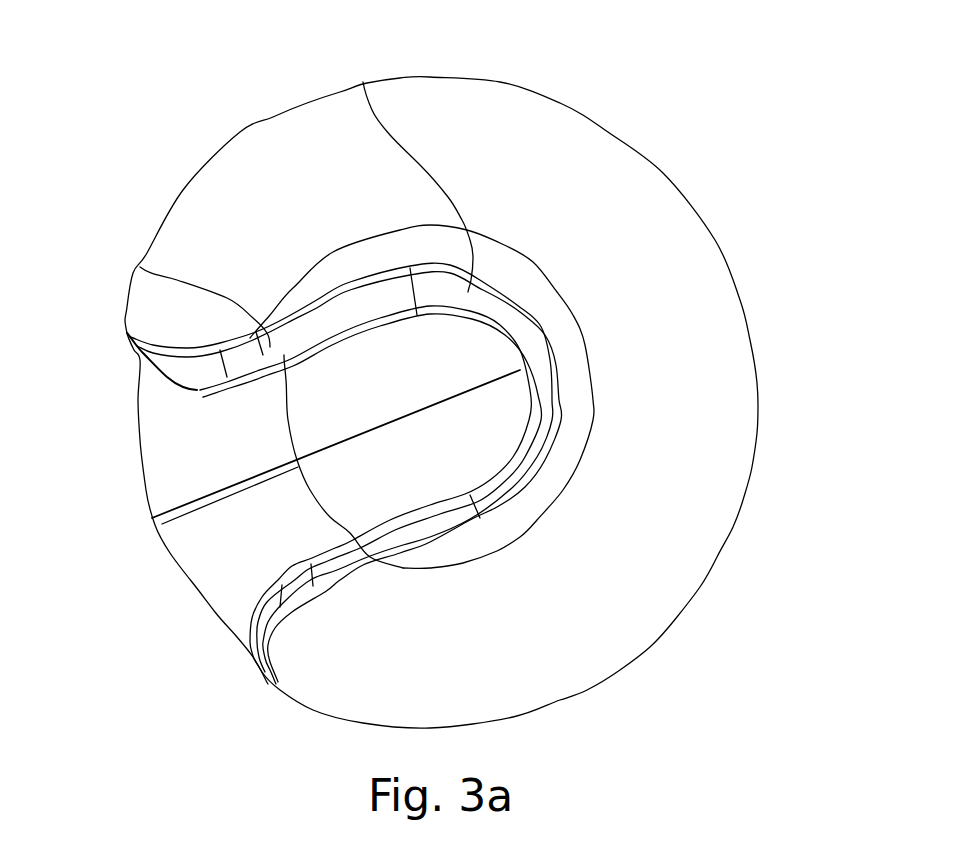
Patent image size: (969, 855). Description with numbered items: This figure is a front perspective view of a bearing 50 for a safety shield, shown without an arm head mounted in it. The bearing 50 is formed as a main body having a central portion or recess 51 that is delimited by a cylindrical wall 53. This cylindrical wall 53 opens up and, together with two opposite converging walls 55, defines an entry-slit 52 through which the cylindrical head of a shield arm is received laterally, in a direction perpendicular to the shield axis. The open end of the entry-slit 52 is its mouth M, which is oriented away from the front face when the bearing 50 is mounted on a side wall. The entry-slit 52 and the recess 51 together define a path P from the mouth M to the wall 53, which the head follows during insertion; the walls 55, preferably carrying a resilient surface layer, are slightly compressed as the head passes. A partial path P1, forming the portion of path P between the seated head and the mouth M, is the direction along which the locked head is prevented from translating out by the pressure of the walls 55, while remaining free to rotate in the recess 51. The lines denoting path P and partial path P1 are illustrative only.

The bearing 50 is at (656, 120).
The central portion or recess 51 is at (450, 456).
The entry-slit 52 is at (230, 456).
The cylindrical wall 53 is at (363, 82).
The converging walls 55 is at (140, 267).
The mouth M is at (153, 452).
The path P is at (398, 406).
The partial path P1 is at (230, 496).